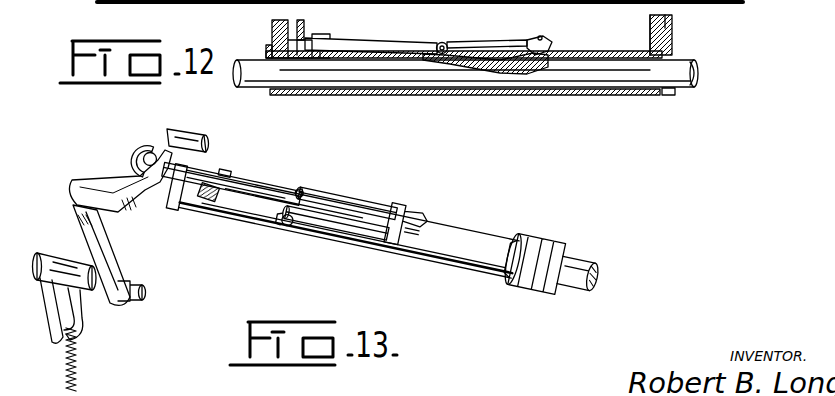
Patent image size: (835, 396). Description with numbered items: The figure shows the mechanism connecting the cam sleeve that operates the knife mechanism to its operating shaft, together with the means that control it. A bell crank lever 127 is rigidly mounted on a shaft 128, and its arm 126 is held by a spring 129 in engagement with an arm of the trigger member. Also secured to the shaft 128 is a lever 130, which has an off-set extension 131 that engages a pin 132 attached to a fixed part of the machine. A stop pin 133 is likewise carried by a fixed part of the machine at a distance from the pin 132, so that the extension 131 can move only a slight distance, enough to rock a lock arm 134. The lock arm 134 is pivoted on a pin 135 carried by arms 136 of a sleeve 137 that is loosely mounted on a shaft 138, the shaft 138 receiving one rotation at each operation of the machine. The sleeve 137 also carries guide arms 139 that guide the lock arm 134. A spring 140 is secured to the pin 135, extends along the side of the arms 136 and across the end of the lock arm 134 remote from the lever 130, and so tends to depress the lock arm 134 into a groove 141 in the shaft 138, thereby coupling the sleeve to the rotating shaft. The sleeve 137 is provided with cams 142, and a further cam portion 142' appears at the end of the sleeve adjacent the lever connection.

In FIG. 13, the arm 126 is at (55, 340).
In FIG. 13, the bell crank lever 127 is at (77, 328).
In FIG. 13, the shaft 128 is at (92, 285).
In FIG. 13, the spring 129 is at (78, 378).
In FIG. 13, the lever 130 is at (121, 260).
In FIG. 12, the off-set extension 131 is at (308, 36).
In FIG. 13, the off-set extension 131 is at (134, 206).
In FIG. 13, the pin 132 is at (148, 156).
In FIG. 12, the stop pin 133 is at (303, 56).
In FIG. 13, the stop pin 133 is at (183, 204).
In FIG. 12, the lock arm 134 is at (383, 41).
In FIG. 13, the lock arm 134 is at (243, 182).
In FIG. 12, the pin 135 is at (444, 44).
In FIG. 13, the pin 135 is at (305, 192).
In FIG. 12, the arms 136 is at (483, 41).
In FIG. 13, the arms 136 is at (340, 197).
In FIG. 12, the sleeve 137 is at (599, 93).
In FIG. 13, the sleeve 137 is at (438, 262).
In FIG. 12, the shaft 138 is at (682, 62).
In FIG. 13, the shaft 138 is at (568, 290).
In FIG. 12, the guide arms 139 is at (326, 52).
In FIG. 13, the guide arms 139 is at (223, 176).
In FIG. 12, the spring 140 is at (542, 37).
In FIG. 13, the spring 140 is at (383, 236).
In FIG. 12, the groove 141 is at (520, 71).
In FIG. 12, the cams 142 is at (474, 30).
In FIG. 13, the cams 142 is at (549, 252).
In FIG. 13, the ring 142' is at (120, 157).